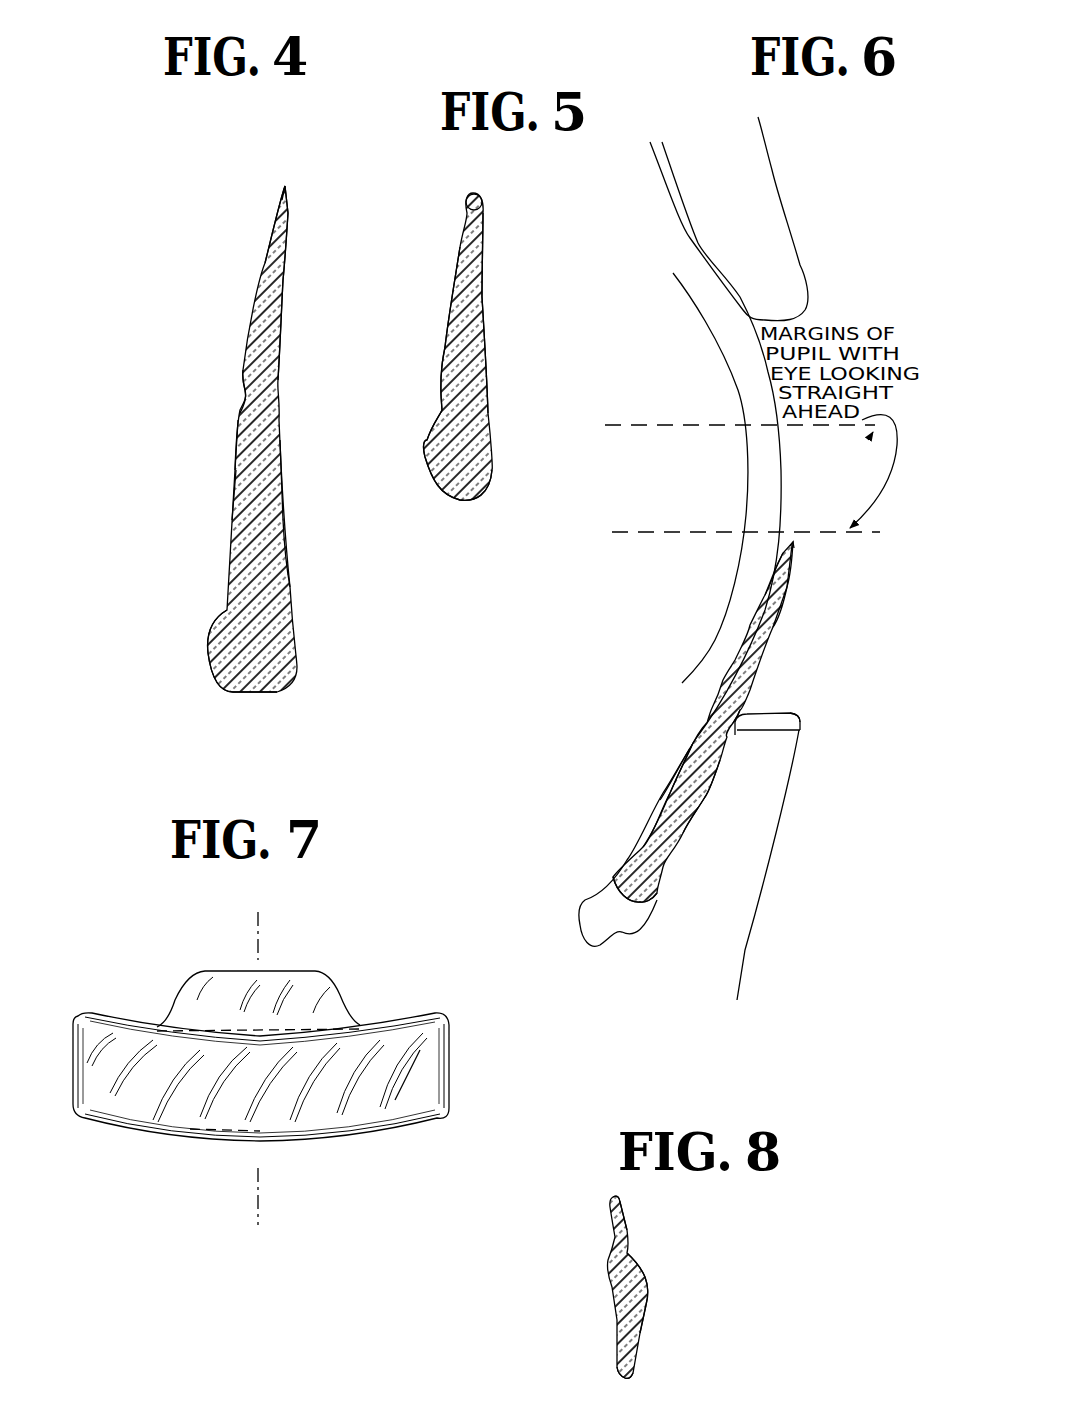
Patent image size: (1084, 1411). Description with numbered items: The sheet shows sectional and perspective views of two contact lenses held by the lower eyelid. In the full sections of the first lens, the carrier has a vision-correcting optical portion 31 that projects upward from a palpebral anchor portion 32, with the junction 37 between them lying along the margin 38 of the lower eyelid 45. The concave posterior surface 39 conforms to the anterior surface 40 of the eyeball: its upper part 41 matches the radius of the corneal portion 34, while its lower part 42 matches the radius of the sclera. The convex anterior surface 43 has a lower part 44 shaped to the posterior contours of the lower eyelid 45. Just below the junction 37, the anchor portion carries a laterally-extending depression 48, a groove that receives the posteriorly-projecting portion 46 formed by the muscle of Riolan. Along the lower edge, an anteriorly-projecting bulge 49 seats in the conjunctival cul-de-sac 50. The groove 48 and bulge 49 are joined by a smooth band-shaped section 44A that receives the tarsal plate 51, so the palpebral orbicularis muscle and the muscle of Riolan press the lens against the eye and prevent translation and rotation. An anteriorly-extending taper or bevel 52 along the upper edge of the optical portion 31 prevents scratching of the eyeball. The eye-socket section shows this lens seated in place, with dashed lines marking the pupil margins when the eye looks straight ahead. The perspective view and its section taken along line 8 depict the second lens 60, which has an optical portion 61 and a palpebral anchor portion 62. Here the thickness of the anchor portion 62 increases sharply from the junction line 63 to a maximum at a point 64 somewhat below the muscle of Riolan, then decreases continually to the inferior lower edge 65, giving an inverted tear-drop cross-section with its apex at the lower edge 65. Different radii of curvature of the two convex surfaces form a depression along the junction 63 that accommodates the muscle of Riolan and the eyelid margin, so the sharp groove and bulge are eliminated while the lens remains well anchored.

In FIG. 7, the section line 8— 8 is at (255, 930).
In FIG. 4, the optical portion 31 is at (263, 262).
In FIG. 6, the optical portion 31 is at (786, 606).
In FIG. 4, the palpebral anchor portion 32 is at (232, 565).
In FIG. 5, the palpebral anchor portion 32 is at (468, 398).
In FIG. 6, the palpebral anchor portion 32 is at (652, 860).
In FIG. 6, the corneal portion 34 is at (752, 600).
In FIG. 4, the junction 37 is at (245, 384).
In FIG. 6, the junction 37 is at (735, 720).
In FIG. 6, the margin of the lower eyelid 38 is at (778, 714).
In FIG. 4, the posterior surface 39 is at (282, 470).
In FIG. 5, the posterior surface 39 is at (487, 322).
In FIG. 6, the anterior surface of the eyeball 40 is at (750, 636).
In FIG. 4, the part of posterior surface conforming to cornea 41 is at (281, 332).
In FIG. 6, the part of posterior surface conforming to cornea 41 is at (783, 563).
In FIG. 4, the part of posterior surface conforming to sclera 42 is at (283, 545).
In FIG. 5, the part of posterior surface conforming to sclera 42 is at (479, 272).
In FIG. 6, the part of posterior surface conforming to sclera 42 is at (666, 800).
In FIG. 4, the anterior surface 43 is at (236, 450).
In FIG. 5, the anterior surface 43 is at (442, 368).
In FIG. 6, the anterior surface 43 is at (790, 590).
In FIG. 6, the lower part of anterior surface 44 is at (705, 800).
In FIG. 4, the band-shaped section 44A is at (233, 508).
In FIG. 5, the band-shaped section 44A is at (455, 310).
In FIG. 6, the band-shaped section 44A is at (660, 833).
In FIG. 6, the lower eyelid 45 is at (775, 764).
In FIG. 6, the posteriorly-projecting portion (muscle of Riolan) 46 is at (700, 735).
In FIG. 4, the depression (groove) 48 is at (246, 400).
In FIG. 5, the depression (groove) 48 is at (467, 212).
In FIG. 6, the depression (groove) 48 is at (800, 722).
In FIG. 4, the bulge 49 is at (212, 686).
In FIG. 5, the bulge 49 is at (430, 478).
In FIG. 6, the bulge 49 is at (652, 890).
In FIG. 6, the conjunctival cul-de-sac 50 is at (606, 935).
In FIG. 6, the tarsal plate 51 is at (675, 765).
In FIG. 4, the taper or bevel 52 is at (288, 186).
In FIG. 6, the taper or bevel 52 is at (792, 545).
In FIG. 7, the contact lens 60 is at (428, 1062).
In FIG. 8, the contact lens 60 is at (610, 1297).
In FIG. 7, the optical portion 61 is at (322, 1000).
In FIG. 8, the optical portion 61 is at (630, 1218).
In FIG. 7, the palpebral anchor portion 62 is at (405, 1105).
In FIG. 8, the palpebral anchor portion 62 is at (633, 1313).
In FIG. 7, the junction line 63 is at (250, 1032).
In FIG. 8, the junction line 63 is at (630, 1256).
In FIG. 8, the point of maximum thickness 64 is at (648, 1280).
In FIG. 7, the lower edge 65 is at (205, 1140).
In FIG. 8, the lower edge 65 is at (630, 1376).